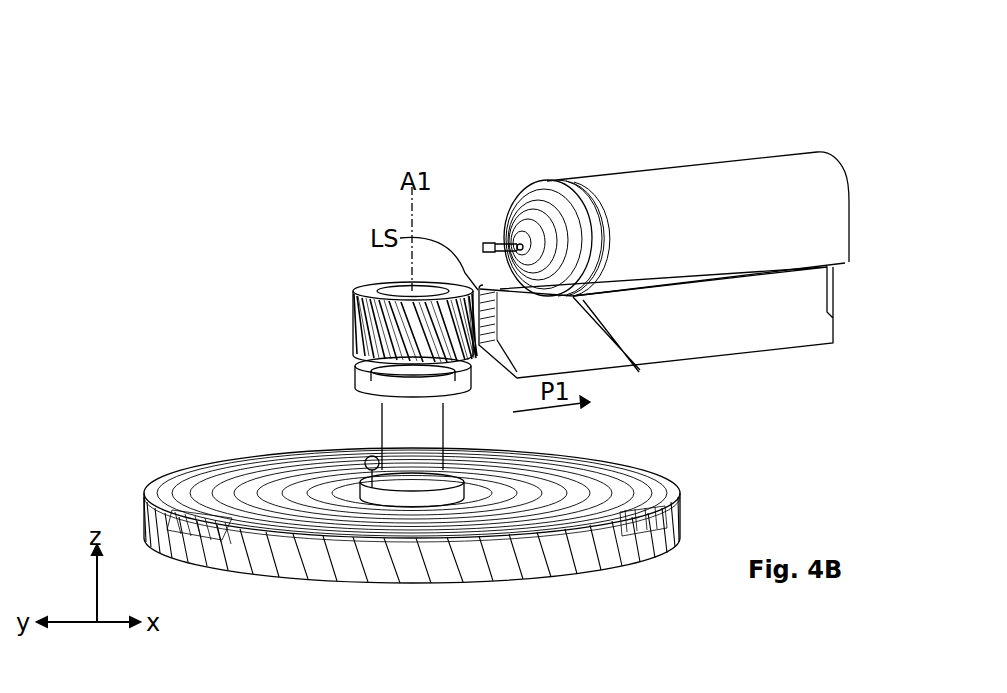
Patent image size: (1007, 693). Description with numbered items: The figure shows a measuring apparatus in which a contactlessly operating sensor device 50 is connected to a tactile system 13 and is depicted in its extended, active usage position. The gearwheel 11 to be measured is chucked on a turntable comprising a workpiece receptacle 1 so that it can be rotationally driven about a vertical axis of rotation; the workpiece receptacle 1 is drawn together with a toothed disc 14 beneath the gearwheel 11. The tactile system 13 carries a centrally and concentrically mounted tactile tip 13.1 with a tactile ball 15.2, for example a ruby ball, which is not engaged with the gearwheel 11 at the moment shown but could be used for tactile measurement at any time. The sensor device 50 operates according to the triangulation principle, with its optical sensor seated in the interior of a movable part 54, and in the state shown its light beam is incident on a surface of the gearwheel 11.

The workpiece receptacle 1 is at (135, 388).
The gearwheel 11 is at (374, 317).
The tactile system 13 is at (678, 148).
The tactile tip 13.1 is at (493, 245).
The drive wheel 14 is at (647, 472).
The tactile ball 15.2 is at (483, 247).
The sensor device 50 is at (738, 327).
The movable part 54 is at (585, 360).